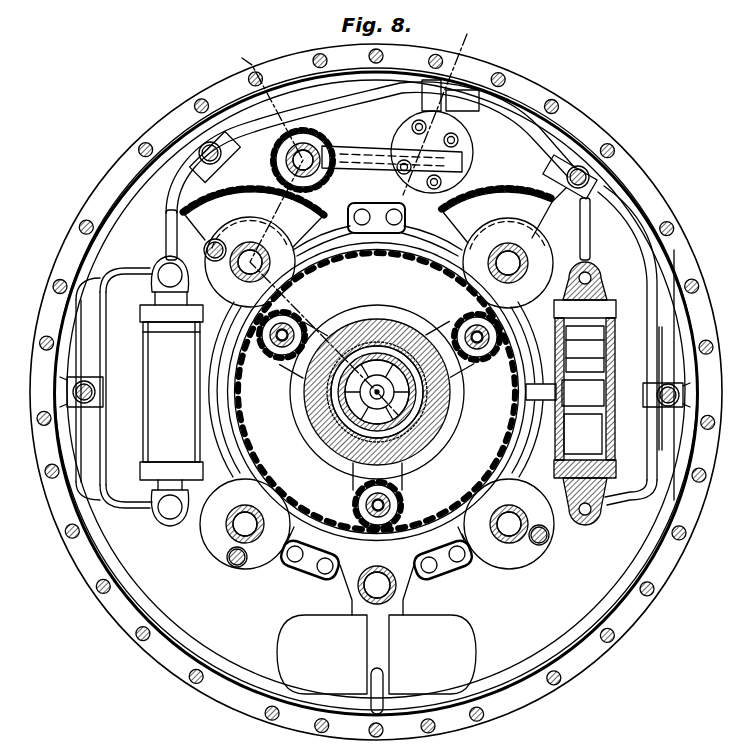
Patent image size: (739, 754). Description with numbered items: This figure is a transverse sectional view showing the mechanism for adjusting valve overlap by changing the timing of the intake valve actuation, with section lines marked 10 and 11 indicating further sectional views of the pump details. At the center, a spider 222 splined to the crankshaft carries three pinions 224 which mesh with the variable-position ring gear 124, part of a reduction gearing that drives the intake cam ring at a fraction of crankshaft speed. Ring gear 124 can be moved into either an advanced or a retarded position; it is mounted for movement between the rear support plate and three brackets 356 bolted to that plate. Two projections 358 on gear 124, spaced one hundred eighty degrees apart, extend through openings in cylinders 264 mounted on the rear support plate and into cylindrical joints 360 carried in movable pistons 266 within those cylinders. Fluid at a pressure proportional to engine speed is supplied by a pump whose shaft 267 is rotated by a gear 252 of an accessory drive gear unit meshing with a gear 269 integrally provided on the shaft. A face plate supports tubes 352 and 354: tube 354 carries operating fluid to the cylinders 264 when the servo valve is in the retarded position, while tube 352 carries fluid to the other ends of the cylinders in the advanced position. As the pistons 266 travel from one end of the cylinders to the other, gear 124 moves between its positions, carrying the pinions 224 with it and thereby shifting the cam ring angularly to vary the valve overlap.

The section line 10- 10 is at (462, 29).
The section line 11- 11 is at (231, 58).
The variable-position ring gear 124 is at (236, 408).
The spider 222 is at (240, 388).
The pinions 224 is at (300, 326).
The gear 252 is at (246, 170).
The cylinders 264 is at (186, 435).
The pistons 266 is at (594, 375).
The pump shaft 267 is at (252, 244).
The gear 269 is at (323, 143).
The tube 352 is at (236, 225).
The tube 354 is at (113, 278).
The brackets 356 is at (368, 210).
The projections 358 is at (530, 395).
The cylindrical joints 360 is at (611, 409).